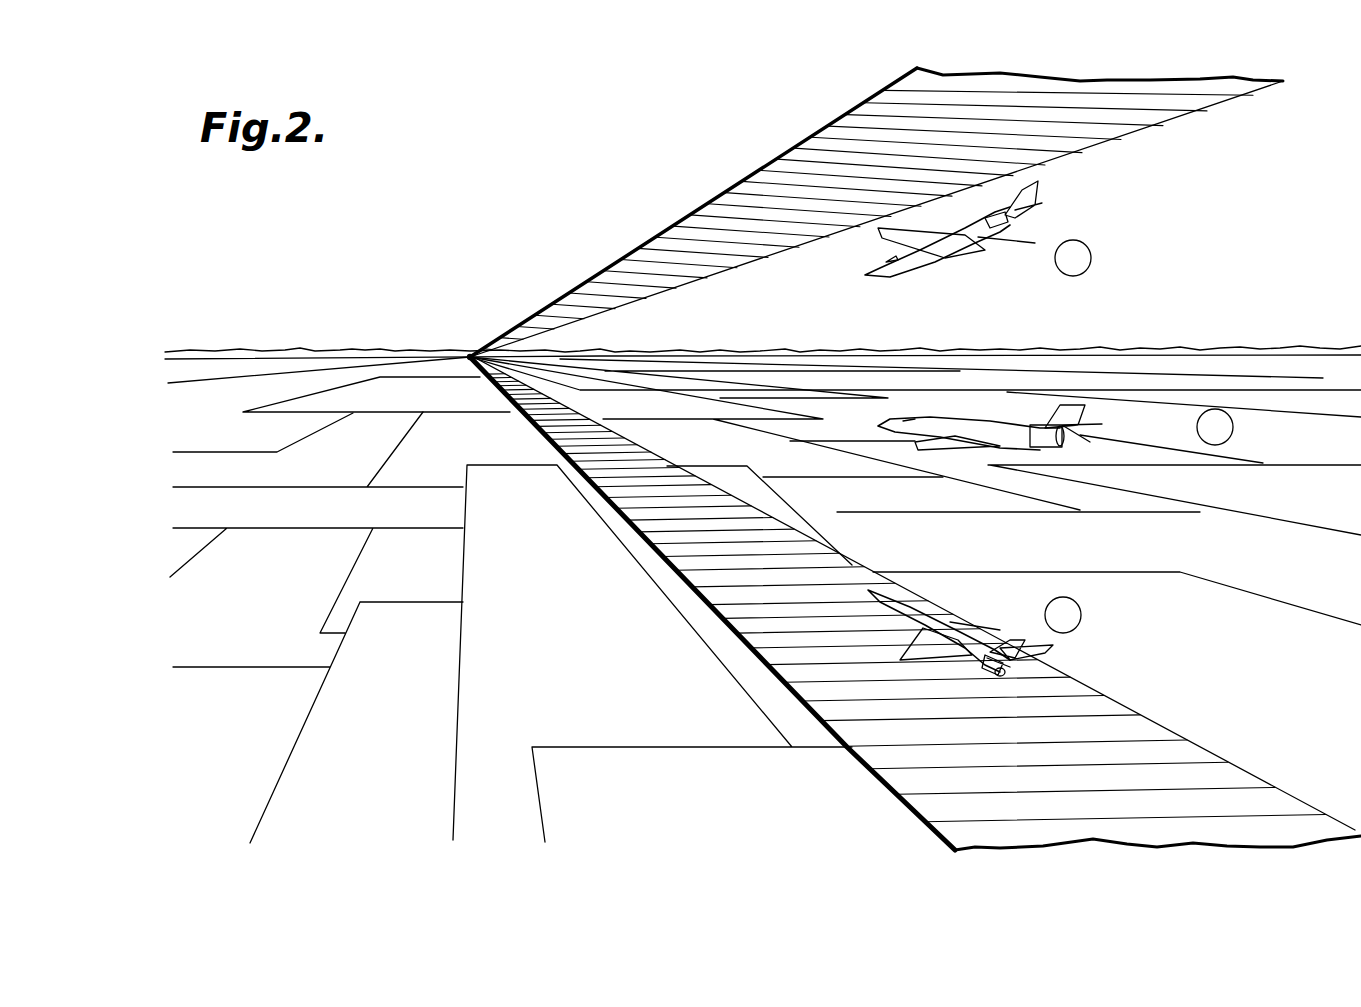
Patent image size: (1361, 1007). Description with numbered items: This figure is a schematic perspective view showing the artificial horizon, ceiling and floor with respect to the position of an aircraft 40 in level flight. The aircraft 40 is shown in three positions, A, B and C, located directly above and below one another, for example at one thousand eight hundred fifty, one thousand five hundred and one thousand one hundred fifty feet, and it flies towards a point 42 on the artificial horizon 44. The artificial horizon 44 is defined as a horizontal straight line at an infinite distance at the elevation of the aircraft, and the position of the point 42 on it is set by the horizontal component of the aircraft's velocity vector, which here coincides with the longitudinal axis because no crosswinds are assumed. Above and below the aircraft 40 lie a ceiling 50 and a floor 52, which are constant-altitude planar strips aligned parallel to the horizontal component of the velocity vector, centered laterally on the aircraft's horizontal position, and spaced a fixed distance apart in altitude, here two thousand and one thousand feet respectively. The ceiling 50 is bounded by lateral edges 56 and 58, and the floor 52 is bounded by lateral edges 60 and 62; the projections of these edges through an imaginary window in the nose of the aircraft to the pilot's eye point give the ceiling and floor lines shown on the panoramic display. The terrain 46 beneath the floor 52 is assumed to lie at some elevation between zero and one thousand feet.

The aircraft 40 is at (1030, 188).
The point on artificial horizon 42 is at (470, 357).
The artificial horizon 44 is at (353, 358).
The terrain 46 is at (288, 387).
The ceiling 50 is at (778, 183).
The floor 52 is at (838, 570).
The lateral edge of ceiling 56 is at (850, 111).
The lateral edge of ceiling 58 is at (800, 248).
The lateral edge of floor 60 is at (797, 693).
The lateral edge of floor 62 is at (1162, 722).